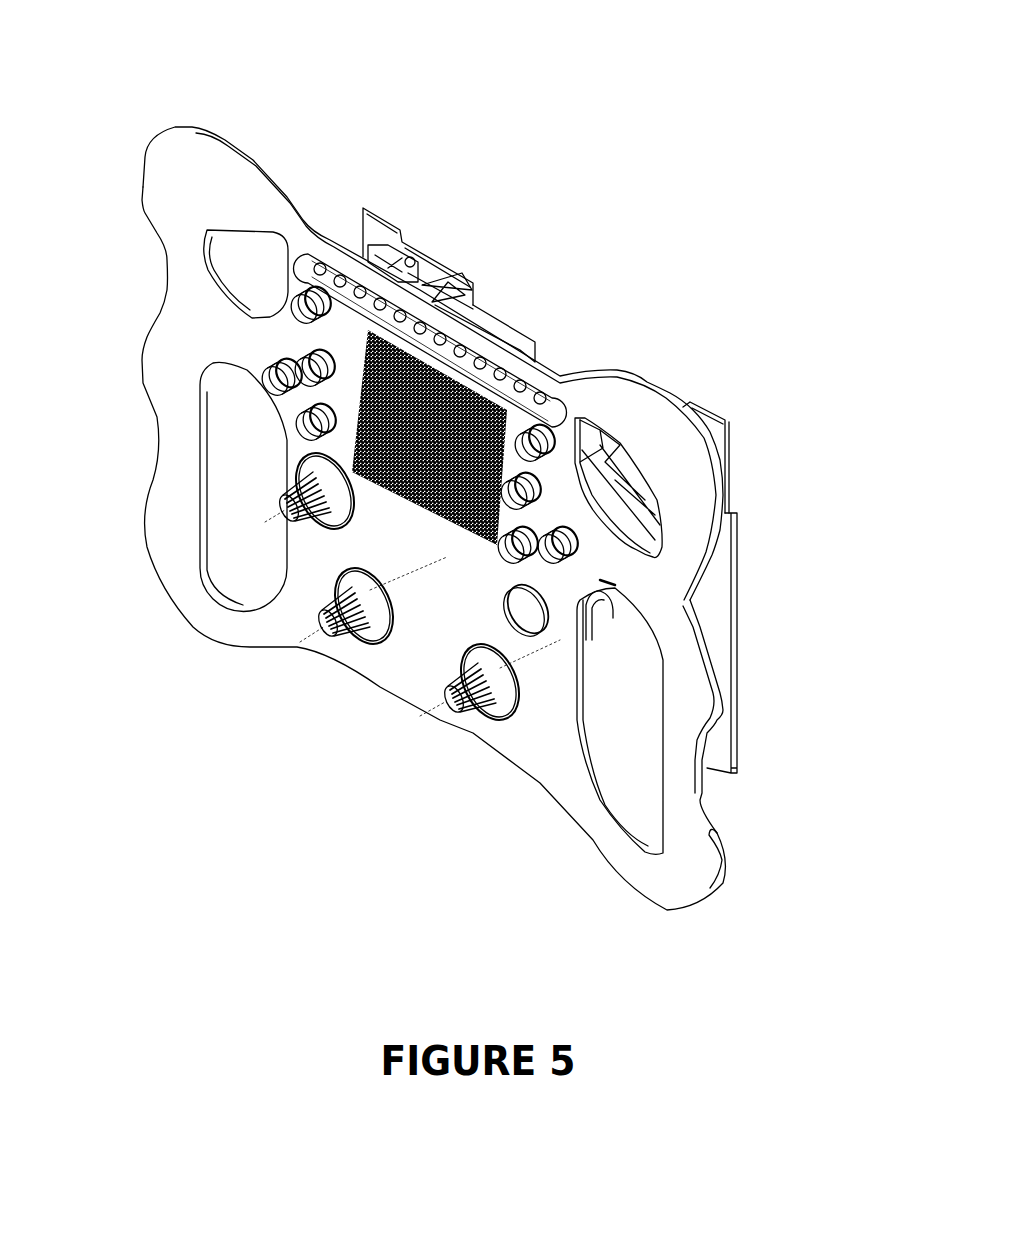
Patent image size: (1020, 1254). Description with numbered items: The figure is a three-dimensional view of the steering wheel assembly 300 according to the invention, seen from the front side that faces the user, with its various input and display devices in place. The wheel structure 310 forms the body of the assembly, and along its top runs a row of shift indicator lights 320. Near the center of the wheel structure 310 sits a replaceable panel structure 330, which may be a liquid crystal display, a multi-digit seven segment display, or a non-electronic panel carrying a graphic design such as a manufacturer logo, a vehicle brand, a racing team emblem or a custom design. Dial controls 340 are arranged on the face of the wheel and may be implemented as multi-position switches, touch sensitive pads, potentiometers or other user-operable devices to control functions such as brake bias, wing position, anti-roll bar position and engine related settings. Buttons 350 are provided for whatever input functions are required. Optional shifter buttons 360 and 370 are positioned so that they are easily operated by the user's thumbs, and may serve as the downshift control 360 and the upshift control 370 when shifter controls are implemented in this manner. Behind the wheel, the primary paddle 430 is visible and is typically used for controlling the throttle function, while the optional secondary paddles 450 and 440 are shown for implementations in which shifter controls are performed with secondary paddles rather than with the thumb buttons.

The steering wheel assembly 300 is at (125, 75).
The wheel structure 310 is at (260, 157).
The shift indicator lights 320 is at (560, 403).
The replaceable panel structure 330 is at (437, 520).
The dial controls 340 is at (432, 695).
The buttons 350 is at (299, 409).
The downshift control button 360 is at (297, 288).
The upshift control button 370 is at (557, 427).
The primary paddle 430 is at (745, 745).
The secondary paddle 440 is at (718, 410).
The secondary paddle 450 is at (402, 220).